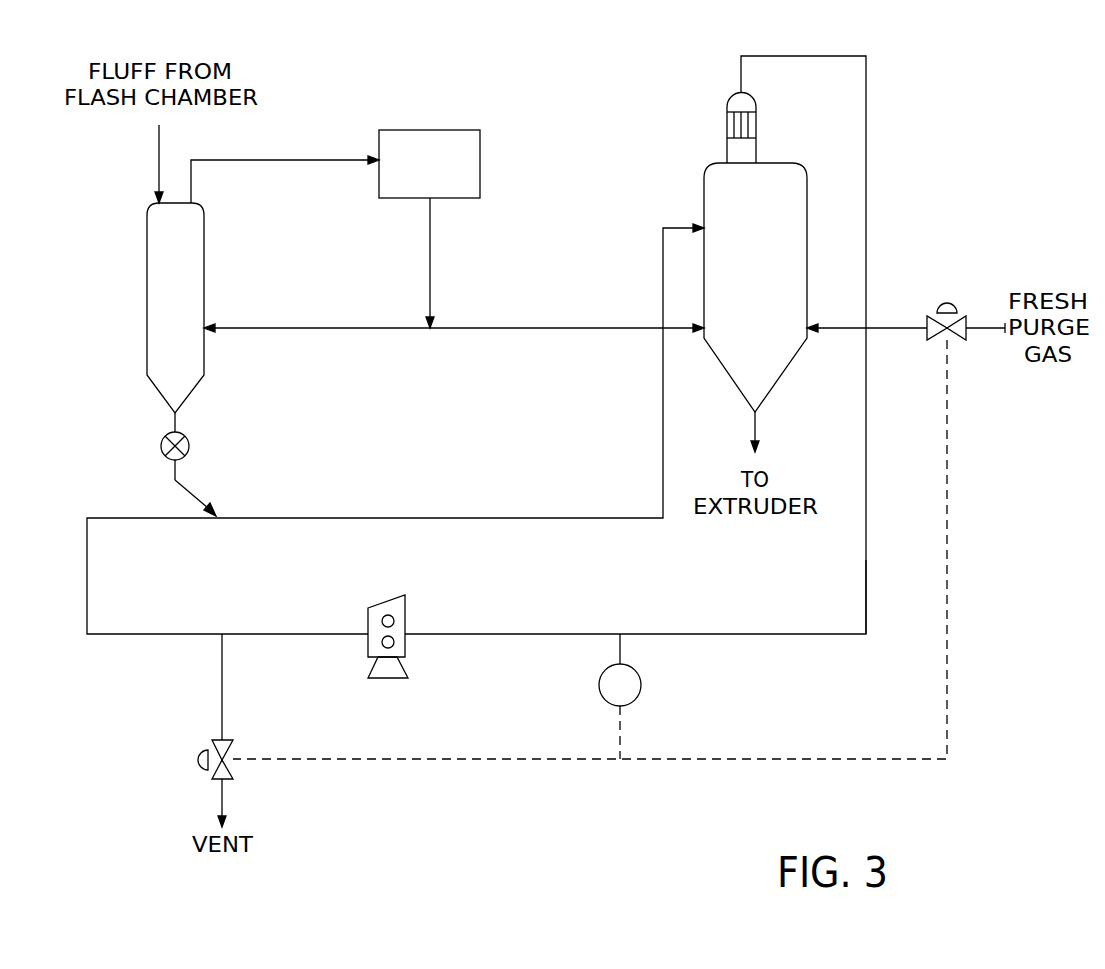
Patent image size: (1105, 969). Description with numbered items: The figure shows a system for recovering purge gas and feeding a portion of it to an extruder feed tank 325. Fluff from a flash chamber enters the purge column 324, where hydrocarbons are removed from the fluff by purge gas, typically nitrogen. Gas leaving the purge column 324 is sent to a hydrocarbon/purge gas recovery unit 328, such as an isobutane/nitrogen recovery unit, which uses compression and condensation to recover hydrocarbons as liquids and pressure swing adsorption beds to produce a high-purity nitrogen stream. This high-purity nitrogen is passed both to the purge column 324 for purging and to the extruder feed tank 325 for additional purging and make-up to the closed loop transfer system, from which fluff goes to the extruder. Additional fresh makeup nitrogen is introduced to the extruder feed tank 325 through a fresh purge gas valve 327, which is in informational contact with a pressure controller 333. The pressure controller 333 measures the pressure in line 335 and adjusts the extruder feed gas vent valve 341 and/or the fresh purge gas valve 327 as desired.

The purge column 324 is at (204, 257).
The extruder feed tank 325 is at (713, 172).
The fresh purge gas valve 327 is at (966, 297).
The hydrocarbon/purge gas recovery unit 328 is at (443, 130).
The pressure controller 333 is at (641, 681).
The line 335 is at (845, 632).
The extruder feed gas vent valve 341 is at (203, 752).